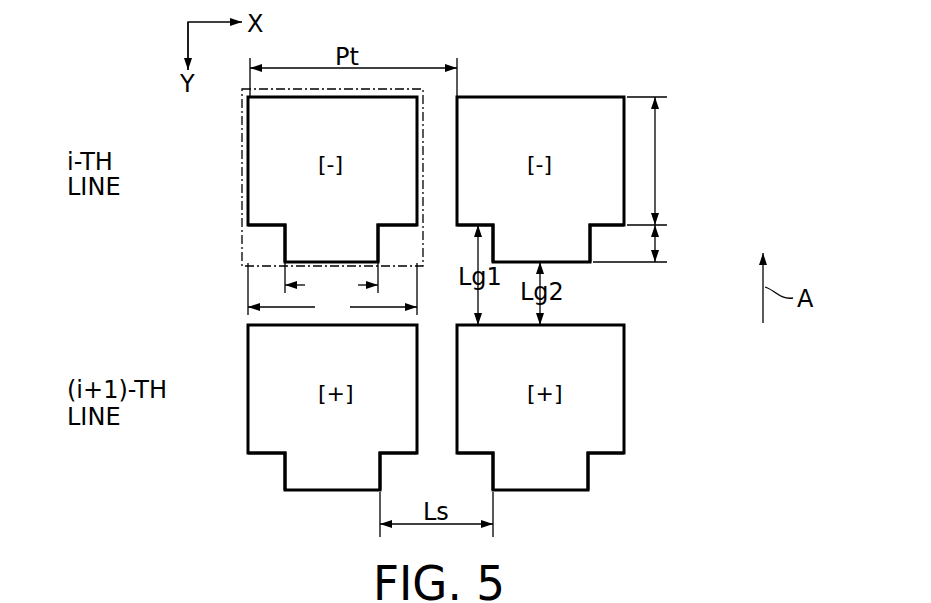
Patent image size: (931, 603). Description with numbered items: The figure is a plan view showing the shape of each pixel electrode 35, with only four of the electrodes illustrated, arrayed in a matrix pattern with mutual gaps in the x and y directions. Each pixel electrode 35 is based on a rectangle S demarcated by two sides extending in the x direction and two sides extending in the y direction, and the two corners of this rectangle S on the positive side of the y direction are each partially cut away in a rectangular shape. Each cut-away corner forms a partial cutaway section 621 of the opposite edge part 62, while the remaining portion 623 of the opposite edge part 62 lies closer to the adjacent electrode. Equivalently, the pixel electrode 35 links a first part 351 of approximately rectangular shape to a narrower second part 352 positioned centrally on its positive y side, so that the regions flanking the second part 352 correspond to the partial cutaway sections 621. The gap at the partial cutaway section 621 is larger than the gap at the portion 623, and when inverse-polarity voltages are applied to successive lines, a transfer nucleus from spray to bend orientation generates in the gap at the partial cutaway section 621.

The pixel electrode 35 is at (248, 168).
The first part 351 is at (670, 161).
The second part 352 is at (652, 243).
The opposite edge part 62 is at (332, 293).
The partial cutaway section 621 is at (270, 240).
The portion other than the partial cutaway section 623 is at (331, 280).
The rectangle S is at (242, 125).